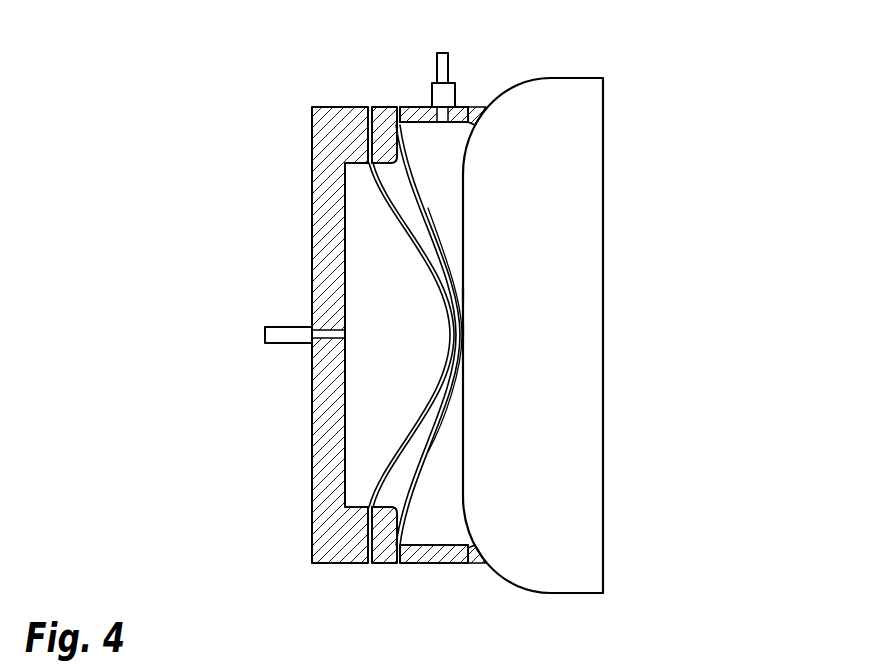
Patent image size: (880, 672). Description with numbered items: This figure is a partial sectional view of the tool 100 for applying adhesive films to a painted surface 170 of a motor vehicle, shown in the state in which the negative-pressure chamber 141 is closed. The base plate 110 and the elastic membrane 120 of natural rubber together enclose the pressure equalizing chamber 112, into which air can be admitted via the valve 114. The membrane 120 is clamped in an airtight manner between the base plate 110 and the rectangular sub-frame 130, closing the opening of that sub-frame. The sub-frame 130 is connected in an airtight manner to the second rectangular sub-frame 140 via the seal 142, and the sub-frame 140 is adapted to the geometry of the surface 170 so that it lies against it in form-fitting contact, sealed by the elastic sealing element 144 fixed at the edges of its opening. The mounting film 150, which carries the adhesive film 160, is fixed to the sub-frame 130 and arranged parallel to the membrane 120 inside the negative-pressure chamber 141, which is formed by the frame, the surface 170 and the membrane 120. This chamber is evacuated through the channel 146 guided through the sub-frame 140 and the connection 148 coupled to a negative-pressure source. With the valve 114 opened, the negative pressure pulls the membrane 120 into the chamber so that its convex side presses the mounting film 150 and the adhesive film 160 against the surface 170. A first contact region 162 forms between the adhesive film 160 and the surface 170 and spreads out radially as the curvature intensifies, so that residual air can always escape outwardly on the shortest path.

The tool 100 is at (220, 205).
The base plate 110 is at (326, 486).
The pressure equalizing chamber 112 is at (370, 327).
The valve 114 is at (288, 335).
The elastic membrane 120 is at (378, 188).
The sub-frame 130 is at (386, 118).
The sub-frame 140 is at (432, 558).
The negative-pressure chamber 141 is at (457, 221).
The seal 142 is at (382, 561).
The elastic sealing element 144 is at (477, 559).
The channel 146 is at (470, 106).
The connection 148 is at (443, 78).
The mounting film 150 is at (417, 462).
The adhesive film 160 is at (458, 295).
The first contact region 162 is at (478, 330).
The surface 170 is at (573, 157).